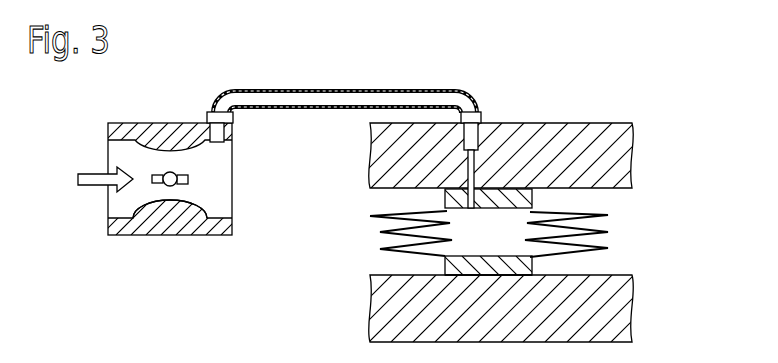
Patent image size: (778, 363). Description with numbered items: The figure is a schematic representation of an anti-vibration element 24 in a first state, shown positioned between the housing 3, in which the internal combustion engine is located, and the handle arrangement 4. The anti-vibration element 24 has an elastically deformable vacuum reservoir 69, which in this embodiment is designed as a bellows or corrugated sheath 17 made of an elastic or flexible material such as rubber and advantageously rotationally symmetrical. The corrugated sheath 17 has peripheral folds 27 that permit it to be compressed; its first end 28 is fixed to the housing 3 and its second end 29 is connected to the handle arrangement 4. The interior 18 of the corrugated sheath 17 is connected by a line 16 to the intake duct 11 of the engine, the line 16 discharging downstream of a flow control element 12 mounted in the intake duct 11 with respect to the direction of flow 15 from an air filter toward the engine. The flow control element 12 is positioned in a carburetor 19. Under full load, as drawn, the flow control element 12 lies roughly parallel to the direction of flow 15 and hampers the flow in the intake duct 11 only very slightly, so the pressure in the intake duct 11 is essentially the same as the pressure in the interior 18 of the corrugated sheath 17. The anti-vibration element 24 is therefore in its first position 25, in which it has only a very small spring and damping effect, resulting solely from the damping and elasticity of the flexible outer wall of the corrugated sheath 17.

The housing 3 is at (565, 138).
The handle arrangement 4 is at (600, 320).
The intake duct 11 is at (222, 207).
The flow control element 12 is at (188, 179).
The direction of flow 15 is at (87, 183).
The line 16 is at (325, 103).
The corrugated sheath 17 is at (605, 248).
The interior 18 is at (498, 245).
The carburetor 19 is at (160, 226).
The anti-vibration element 24 is at (651, 226).
The first position 25 is at (377, 251).
The peripheral folds 27 is at (370, 232).
The first end 28 is at (534, 208).
The second end 29 is at (533, 260).
The vacuum reservoir 69 is at (443, 252).